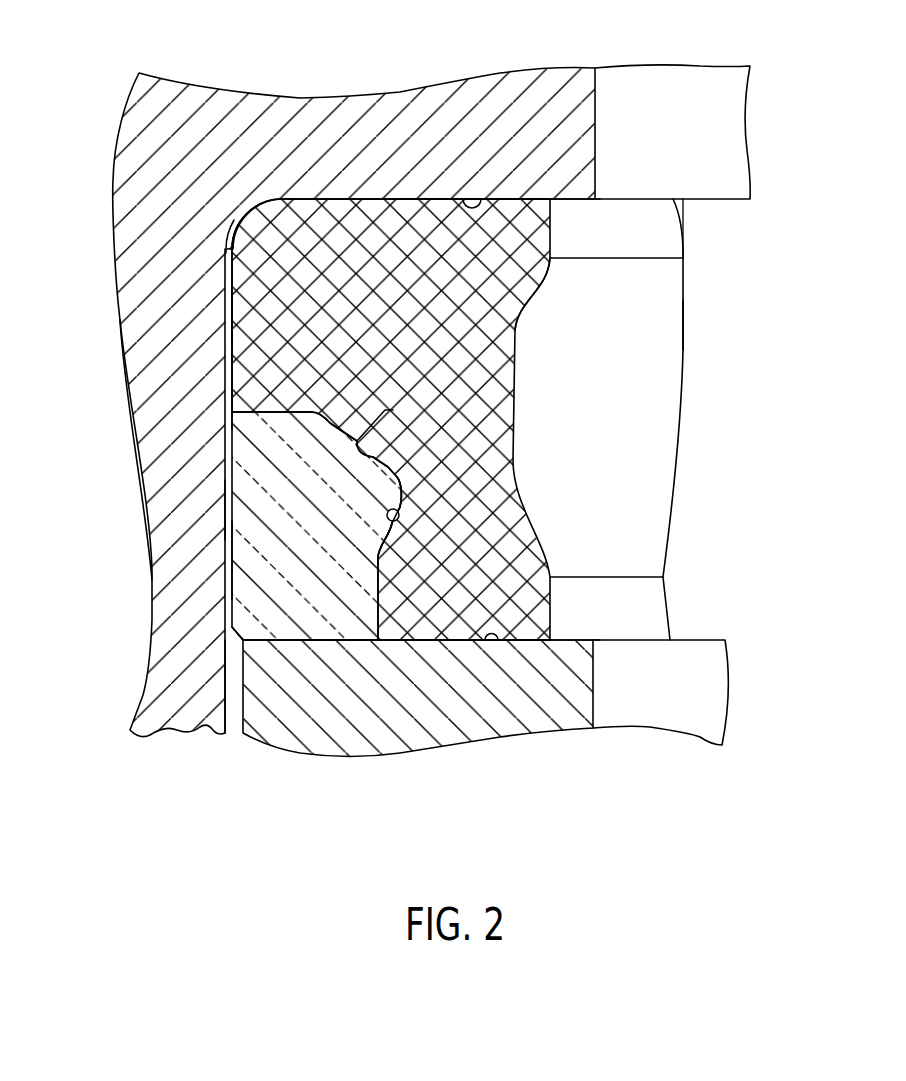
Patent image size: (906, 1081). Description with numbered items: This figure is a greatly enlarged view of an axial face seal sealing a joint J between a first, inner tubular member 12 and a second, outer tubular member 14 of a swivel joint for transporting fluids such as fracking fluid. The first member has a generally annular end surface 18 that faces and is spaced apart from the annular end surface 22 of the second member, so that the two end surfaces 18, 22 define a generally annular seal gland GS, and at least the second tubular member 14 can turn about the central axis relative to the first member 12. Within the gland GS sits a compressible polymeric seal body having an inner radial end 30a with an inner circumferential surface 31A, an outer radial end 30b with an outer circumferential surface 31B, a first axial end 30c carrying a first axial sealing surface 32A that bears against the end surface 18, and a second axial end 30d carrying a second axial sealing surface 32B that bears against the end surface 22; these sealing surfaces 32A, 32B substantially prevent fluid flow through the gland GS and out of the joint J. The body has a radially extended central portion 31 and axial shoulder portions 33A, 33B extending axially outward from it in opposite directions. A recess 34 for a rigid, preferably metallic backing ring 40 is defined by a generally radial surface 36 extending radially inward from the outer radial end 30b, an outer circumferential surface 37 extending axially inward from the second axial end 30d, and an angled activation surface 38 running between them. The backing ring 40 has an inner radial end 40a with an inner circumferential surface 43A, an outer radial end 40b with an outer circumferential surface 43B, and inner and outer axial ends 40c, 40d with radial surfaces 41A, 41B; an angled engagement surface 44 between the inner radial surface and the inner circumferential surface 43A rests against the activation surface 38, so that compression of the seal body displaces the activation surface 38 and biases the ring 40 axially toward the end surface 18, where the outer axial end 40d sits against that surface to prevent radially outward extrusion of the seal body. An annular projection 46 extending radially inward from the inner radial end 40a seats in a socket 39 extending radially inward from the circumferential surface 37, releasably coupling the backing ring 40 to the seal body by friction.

The first tubular member 12 is at (288, 730).
The second tubular member 14 is at (574, 95).
The end surface 18 is at (490, 640).
The end surface 22 is at (482, 200).
The inner radial end 30a is at (665, 420).
The outer radial end 30b is at (240, 370).
The first axial end 30c is at (427, 627).
The second axial end 30d is at (420, 199).
The central portion 31 is at (490, 383).
The inner circumferential surface 31A is at (667, 362).
The outer circumferential surface 31B is at (240, 325).
The first axial sealing surface 32A is at (532, 640).
The second axial sealing surface 32B is at (517, 199).
The axial shoulder portion 33A is at (533, 597).
The axial shoulder portion 33B is at (523, 258).
The recess 34 is at (325, 467).
The radial surface 36 is at (245, 436).
The outer circumferential surface 37 is at (377, 592).
The activation surface 38 is at (377, 457).
The socket 39 is at (400, 527).
The backing ring 40 is at (232, 472).
The inner radial end 40a is at (403, 480).
The outer radial end 40b is at (243, 557).
The inner axial end 40c is at (263, 418).
The outer axial end 40d is at (307, 642).
The upper edge portion 41A is at (292, 408).
The lower edge portion 41B is at (340, 641).
The inner circumferential surface 43A is at (387, 550).
The outer circumferential surface 43B is at (205, 511).
The engagement surface 44 is at (368, 412).
The projection 46 is at (397, 500).
The joint J is at (148, 379).
The seal gland GS is at (612, 230).